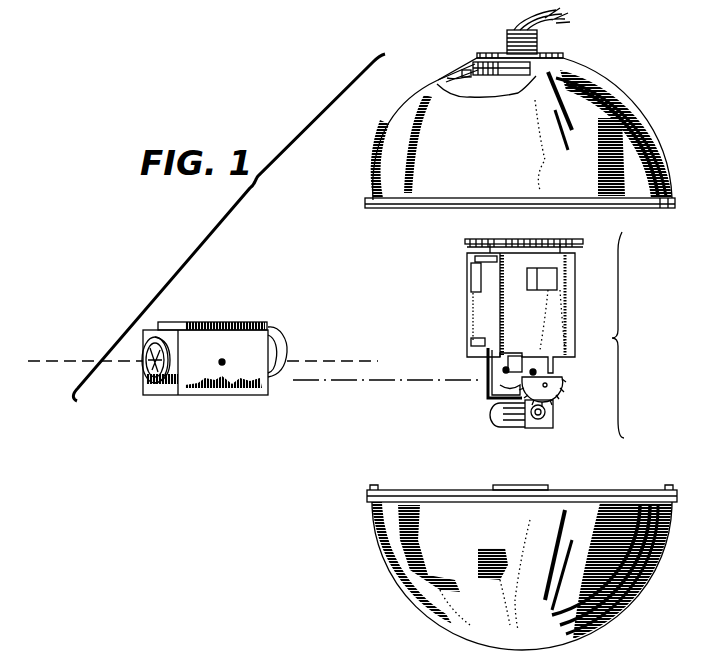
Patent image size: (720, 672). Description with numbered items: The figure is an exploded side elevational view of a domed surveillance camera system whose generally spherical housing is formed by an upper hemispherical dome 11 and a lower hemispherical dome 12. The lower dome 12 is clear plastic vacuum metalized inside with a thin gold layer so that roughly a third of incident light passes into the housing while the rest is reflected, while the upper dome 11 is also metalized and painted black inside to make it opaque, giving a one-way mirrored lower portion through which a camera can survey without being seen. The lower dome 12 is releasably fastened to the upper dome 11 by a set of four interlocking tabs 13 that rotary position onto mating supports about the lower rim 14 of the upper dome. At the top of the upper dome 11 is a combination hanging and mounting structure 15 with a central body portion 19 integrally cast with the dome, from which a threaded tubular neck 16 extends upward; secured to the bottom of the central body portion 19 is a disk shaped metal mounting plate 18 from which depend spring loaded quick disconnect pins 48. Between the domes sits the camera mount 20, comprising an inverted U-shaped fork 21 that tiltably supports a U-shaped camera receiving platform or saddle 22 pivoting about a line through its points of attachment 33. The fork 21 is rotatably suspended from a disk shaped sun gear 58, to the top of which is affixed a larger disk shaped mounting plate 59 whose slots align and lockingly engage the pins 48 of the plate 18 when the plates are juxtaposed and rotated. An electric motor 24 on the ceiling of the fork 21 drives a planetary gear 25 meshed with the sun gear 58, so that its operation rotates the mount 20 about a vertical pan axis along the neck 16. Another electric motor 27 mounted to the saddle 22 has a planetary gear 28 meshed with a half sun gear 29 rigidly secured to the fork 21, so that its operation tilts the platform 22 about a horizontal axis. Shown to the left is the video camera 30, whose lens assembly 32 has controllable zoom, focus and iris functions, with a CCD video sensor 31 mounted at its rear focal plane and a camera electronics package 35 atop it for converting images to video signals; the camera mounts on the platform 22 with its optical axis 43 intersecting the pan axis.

The upper hemispherical dome 11 is at (630, 101).
The lower hemispherical dome 12 is at (628, 598).
The interlocking tabs 13 is at (372, 486).
The lower rim 14 is at (636, 210).
The hanging and mounting structure 15 is at (456, 33).
The threaded tubular neck 16 is at (507, 40).
The mounting plate 18 is at (462, 69).
The central body portion 19 is at (458, 72).
The camera mount 20 is at (612, 338).
The inverted U-shaped fork 21 is at (575, 280).
The camera receiving platform or saddle 22 is at (490, 397).
The electric motor 24 is at (468, 283).
The planetary gear 25 is at (470, 248).
The electric motor 27 is at (497, 420).
The planetary gear 28 is at (553, 414).
The half sun gear 29 is at (562, 382).
The video camera 30 is at (246, 313).
The CCD video sensor 31 is at (278, 337).
The lens assembly 32 is at (200, 341).
The points of attachment 33 is at (533, 368).
The camera electronics package 35 is at (226, 322).
The optical axis 43 is at (58, 362).
The spring loaded quick disconnect pins 48 is at (438, 80).
The sun gear 58 is at (560, 245).
The mounting plate 59 is at (512, 241).